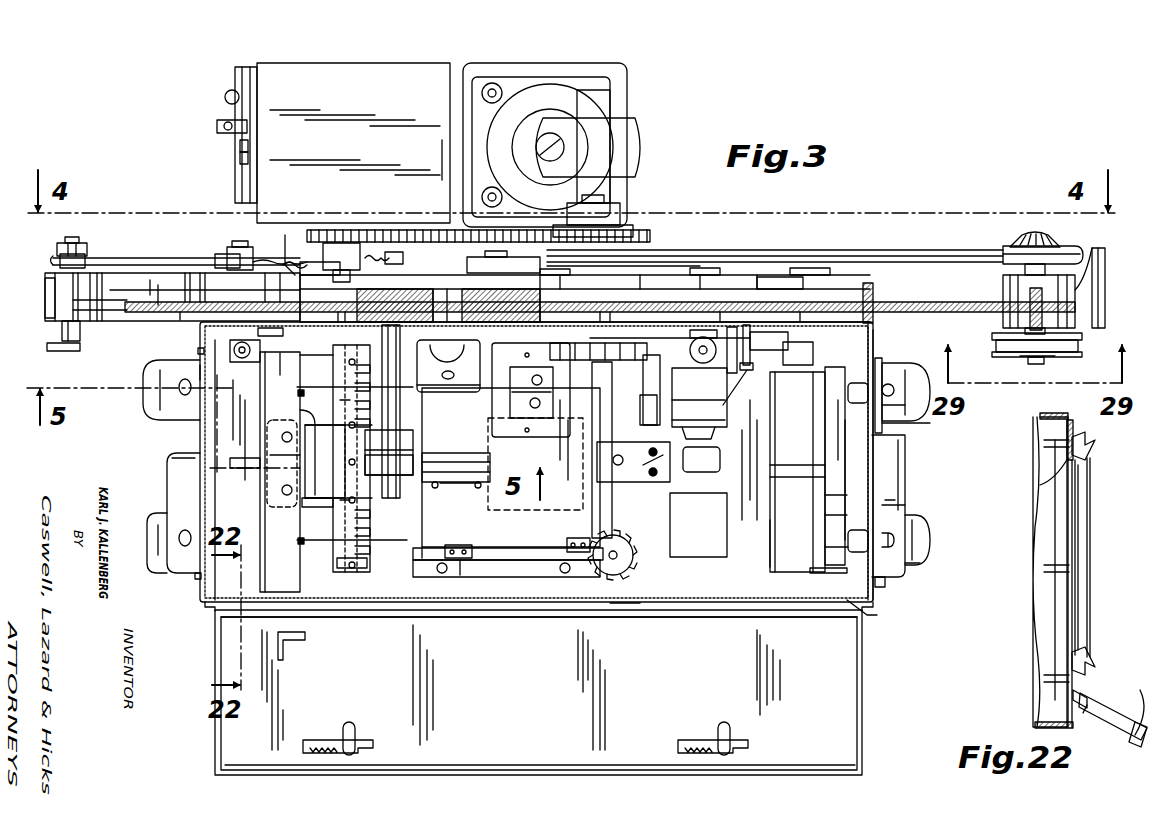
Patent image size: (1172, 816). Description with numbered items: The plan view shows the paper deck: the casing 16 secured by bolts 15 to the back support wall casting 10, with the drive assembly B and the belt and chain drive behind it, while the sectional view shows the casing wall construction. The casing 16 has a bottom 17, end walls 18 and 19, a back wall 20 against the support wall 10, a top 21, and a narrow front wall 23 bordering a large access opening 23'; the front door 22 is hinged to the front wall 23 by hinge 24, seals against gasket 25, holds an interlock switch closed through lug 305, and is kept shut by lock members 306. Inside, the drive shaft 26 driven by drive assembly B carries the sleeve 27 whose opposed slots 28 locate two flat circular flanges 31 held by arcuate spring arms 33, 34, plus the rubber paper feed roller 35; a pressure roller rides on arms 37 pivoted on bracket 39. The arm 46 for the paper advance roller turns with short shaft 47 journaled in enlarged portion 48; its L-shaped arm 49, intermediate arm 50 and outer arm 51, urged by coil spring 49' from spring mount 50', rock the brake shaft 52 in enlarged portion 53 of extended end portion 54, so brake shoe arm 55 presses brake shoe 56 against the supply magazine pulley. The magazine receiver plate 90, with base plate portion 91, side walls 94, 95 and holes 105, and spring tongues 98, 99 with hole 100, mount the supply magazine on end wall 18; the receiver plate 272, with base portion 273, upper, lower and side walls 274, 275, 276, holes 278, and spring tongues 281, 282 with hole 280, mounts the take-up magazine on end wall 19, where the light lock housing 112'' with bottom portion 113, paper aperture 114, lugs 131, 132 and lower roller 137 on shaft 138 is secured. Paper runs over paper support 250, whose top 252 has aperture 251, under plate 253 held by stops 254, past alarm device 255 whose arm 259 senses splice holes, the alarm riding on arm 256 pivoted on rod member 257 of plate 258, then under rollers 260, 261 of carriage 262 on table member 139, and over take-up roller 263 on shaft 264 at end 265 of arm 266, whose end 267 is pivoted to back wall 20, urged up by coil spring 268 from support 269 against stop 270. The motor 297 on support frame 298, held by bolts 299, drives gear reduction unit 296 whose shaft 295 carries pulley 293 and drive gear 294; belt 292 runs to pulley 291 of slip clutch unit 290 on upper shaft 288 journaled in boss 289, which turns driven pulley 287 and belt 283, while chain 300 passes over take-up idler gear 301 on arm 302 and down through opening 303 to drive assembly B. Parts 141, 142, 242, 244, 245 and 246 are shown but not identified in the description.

In FIG. 3, the motor B is at (358, 90).
In FIG. 3, the base rail 10 is at (140, 312).
In FIG. 3, the pin 15 is at (233, 350).
In FIG. 3, the frame 16 is at (635, 322).
In FIG. 22, the frame 16 is at (1035, 563).
In FIG. 3, the bottom wall 17 is at (805, 605).
In FIG. 22, the bottom wall 17 is at (1040, 720).
In FIG. 3, the plate 18 is at (207, 508).
In FIG. 3, the side wall 19 is at (862, 502).
In FIG. 22, the side wall 19 is at (1050, 588).
In FIG. 3, the relay box 20 is at (552, 322).
In FIG. 3, the top wall 21 is at (1050, 413).
In FIG. 3, the cover 22 is at (539, 688).
In FIG. 22, the cover 22 is at (1138, 708).
In FIG. 3, the flange 23 is at (619, 624).
In FIG. 22, the flange 23 is at (1062, 546).
In FIG. 22, the channel 23' is at (1049, 557).
In FIG. 22, the hinge 24 is at (1085, 695).
In FIG. 3, the lip 25 is at (348, 618).
In FIG. 22, the lip 25 is at (1087, 630).
In FIG. 3, the block 26 is at (350, 580).
In FIG. 3, the tab 27 is at (337, 564).
In FIG. 3, the tooth 28 is at (340, 408).
In FIG. 3, the stop 31 is at (298, 393).
In FIG. 3, the slide 33 is at (335, 382).
In FIG. 3, the bar 34 is at (375, 388).
In FIG. 3, the housing 35 is at (338, 461).
In FIG. 3, the link 37 is at (300, 410).
In FIG. 3, the bracket 39 is at (285, 510).
In FIG. 3, the plate 46 is at (298, 373).
In FIG. 3, the nut 47 is at (246, 237).
In FIG. 3, the rod 48 is at (205, 289).
In FIG. 3, the spring 49 is at (280, 248).
In FIG. 3, the spring 49' is at (347, 231).
In FIG. 3, the rod 50 is at (176, 251).
In FIG. 3, the collar 50' is at (407, 257).
In FIG. 3, the pin 51 is at (55, 261).
In FIG. 3, the nut 52 is at (74, 244).
In FIG. 3, the bracket 53 is at (60, 294).
In FIG. 3, the bar 54 is at (128, 287).
In FIG. 3, the post 55 is at (62, 333).
In FIG. 3, the foot 56 is at (52, 349).
In FIG. 3, the knob 90 is at (168, 469).
In FIG. 3, the shaft 91 is at (200, 404).
In FIG. 3, the screw 94 is at (198, 350).
In FIG. 3, the screw 95 is at (197, 580).
In FIG. 3, the knob 98 is at (155, 404).
In FIG. 3, the knob 99 is at (160, 565).
In FIG. 3, the opening 100 is at (180, 385).
In FIG. 3, the opening 105 is at (185, 546).
In FIG. 3, the pin 112'' is at (914, 490).
In FIG. 3, the contact 113 is at (830, 493).
In FIG. 3, the contact 114 is at (840, 516).
In FIG. 3, the terminal 131 is at (850, 549).
In FIG. 3, the button 132 is at (850, 400).
In FIG. 3, the strip 137 is at (835, 573).
In FIG. 3, the corner 138 is at (860, 605).
In FIG. 3, the plate 139 is at (380, 572).
In FIG. 3, the pin 141 is at (316, 363).
In FIG. 3, the pin 142 is at (294, 360).
In FIG. 3, the terminal 242 is at (217, 126).
In FIG. 3, the ring 244 is at (228, 102).
In FIG. 3, the contact 245 is at (240, 158).
In FIG. 3, the contact 246 is at (240, 148).
In FIG. 3, the plate 250 is at (495, 578).
In FIG. 3, the dashed region 251 is at (540, 512).
In FIG. 3, the post 252 is at (428, 560).
In FIG. 3, the plate 253 is at (511, 467).
In FIG. 3, the clip 254 is at (455, 545).
In FIG. 3, the arm 255 is at (458, 485).
In FIG. 3, the switch 256 is at (460, 452).
In FIG. 3, the bracket 257 is at (400, 416).
In FIG. 3, the bracket 258 is at (300, 334).
In FIG. 3, the contact 259 is at (425, 465).
In FIG. 3, the relay 260 is at (698, 525).
In FIG. 3, the relay 261 is at (650, 438).
In FIG. 3, the gear 262 is at (675, 588).
In FIG. 3, the housing 263 is at (783, 527).
In FIG. 3, the capacitor 264 is at (805, 374).
In FIG. 3, the terminal 265 is at (813, 353).
In FIG. 3, the lever 266 is at (744, 365).
In FIG. 3, the pulley 267 is at (722, 330).
In FIG. 3, the coil 268 is at (742, 368).
In FIG. 3, the coil 269 is at (698, 413).
In FIG. 3, the arm 270 is at (775, 335).
In FIG. 3, the bracket 272 is at (890, 445).
In FIG. 3, the plate 273 is at (908, 424).
In FIG. 3, the bracket 274 is at (893, 503).
In FIG. 3, the knob 275 is at (901, 407).
In FIG. 3, the bracket 276 is at (882, 365).
In FIG. 3, the knob 278 is at (897, 541).
In FIG. 3, the pin 280 is at (902, 391).
In FIG. 3, the bracket 281 is at (918, 560).
In FIG. 3, the knob 282 is at (910, 372).
In FIG. 3, the spool 283 is at (1078, 343).
In FIG. 3, the shaft 287 is at (1058, 358).
In FIG. 3, the nut 288 is at (1034, 365).
In FIG. 3, the bearing block 289 is at (1008, 284).
In FIG. 3, the gear 290 is at (1062, 238).
In FIG. 3, the pulley 291 is at (1003, 248).
In FIG. 3, the shaft 292 is at (830, 252).
In FIG. 3, the shaft 293 is at (660, 252).
In FIG. 3, the sprocket 294 is at (625, 226).
In FIG. 3, the coupling 295 is at (610, 206).
In FIG. 3, the crank 296 is at (635, 145).
In FIG. 3, the disc 297 is at (555, 95).
In FIG. 3, the motor housing 298 is at (482, 75).
In FIG. 3, the block 299 is at (505, 254).
In FIG. 3, the chain 300 is at (412, 229).
In FIG. 3, the block 301 is at (345, 248).
In FIG. 3, the block 302 is at (332, 279).
In FIG. 3, the spring 303 is at (292, 236).
In FIG. 3, the bracket 305 is at (285, 648).
In FIG. 22, the bracket 305 is at (1142, 701).
In FIG. 3, the clip 306 is at (355, 728).